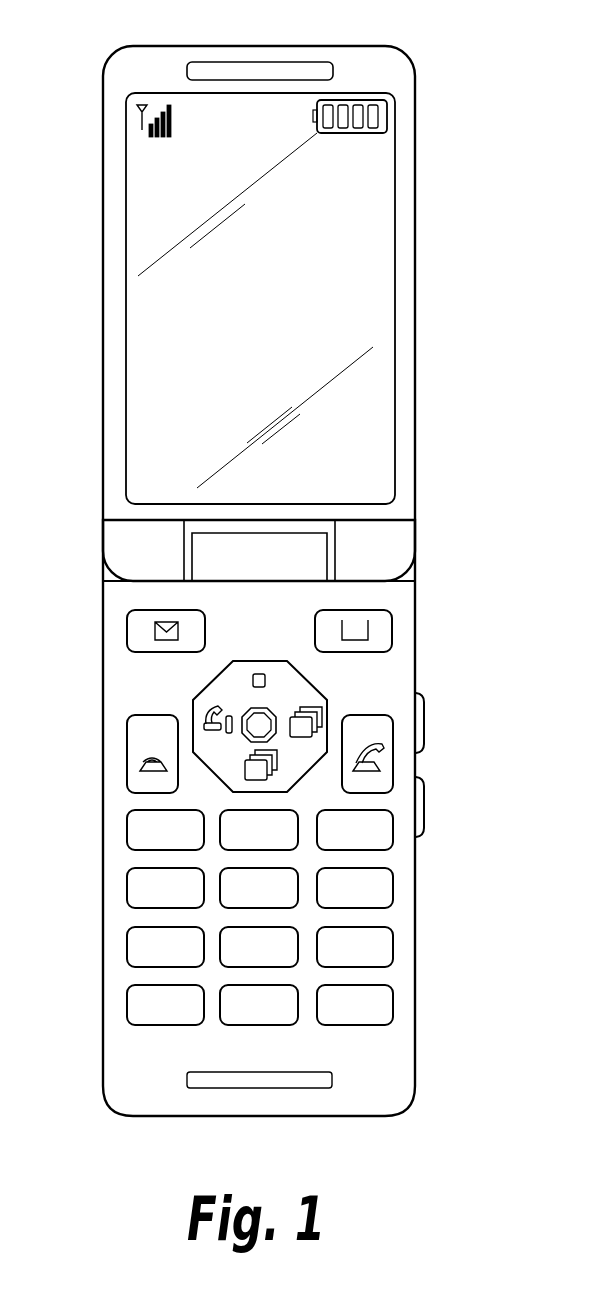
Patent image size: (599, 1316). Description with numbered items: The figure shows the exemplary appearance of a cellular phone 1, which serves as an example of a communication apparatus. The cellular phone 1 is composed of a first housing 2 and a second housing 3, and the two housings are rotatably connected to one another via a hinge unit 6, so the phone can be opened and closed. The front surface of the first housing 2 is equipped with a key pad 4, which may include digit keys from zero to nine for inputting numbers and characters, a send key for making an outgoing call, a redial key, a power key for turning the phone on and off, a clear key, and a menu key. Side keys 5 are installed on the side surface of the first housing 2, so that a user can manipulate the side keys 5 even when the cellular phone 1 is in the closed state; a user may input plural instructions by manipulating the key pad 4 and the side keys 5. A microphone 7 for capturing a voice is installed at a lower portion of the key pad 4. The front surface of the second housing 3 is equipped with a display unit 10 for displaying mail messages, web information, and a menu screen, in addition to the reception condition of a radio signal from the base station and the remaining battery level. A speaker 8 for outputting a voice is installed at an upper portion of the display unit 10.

The cellular phone 1 is at (457, 1060).
The first housing 2 is at (103, 1050).
The second housing 3 is at (103, 433).
The key pad 4 is at (83, 630).
The side keys 5 is at (436, 693).
The hinge unit 6 is at (250, 562).
The microphone 7 is at (195, 1088).
The speaker 8 is at (317, 62).
The display unit 10 is at (127, 313).